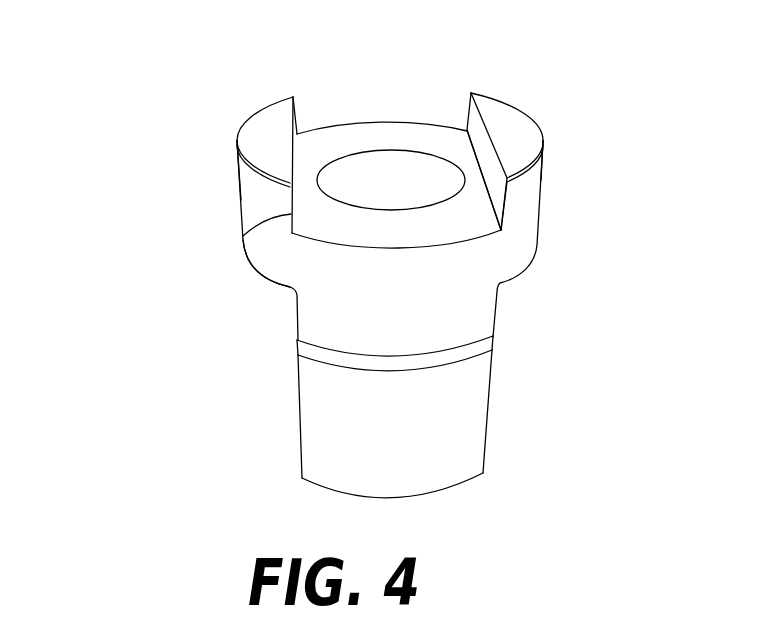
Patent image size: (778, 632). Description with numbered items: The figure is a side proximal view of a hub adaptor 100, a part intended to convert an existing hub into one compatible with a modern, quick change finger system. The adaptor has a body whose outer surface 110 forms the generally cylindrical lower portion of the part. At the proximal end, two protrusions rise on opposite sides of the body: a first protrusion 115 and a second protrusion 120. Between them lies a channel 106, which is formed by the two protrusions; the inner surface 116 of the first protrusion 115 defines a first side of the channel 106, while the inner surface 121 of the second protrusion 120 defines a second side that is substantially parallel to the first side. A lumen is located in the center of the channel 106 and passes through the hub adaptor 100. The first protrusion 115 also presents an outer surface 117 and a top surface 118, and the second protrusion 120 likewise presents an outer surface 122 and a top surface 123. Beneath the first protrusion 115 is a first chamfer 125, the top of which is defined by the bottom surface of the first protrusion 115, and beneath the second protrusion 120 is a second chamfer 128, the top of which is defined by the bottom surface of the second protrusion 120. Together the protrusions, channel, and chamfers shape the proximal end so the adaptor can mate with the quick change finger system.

The hub adaptor 100 is at (384, 271).
The channel 106 is at (388, 135).
The outer surface 110 is at (370, 480).
The first protrusion 115 is at (527, 198).
The inner surface 116 is at (500, 207).
The outer surface 117 is at (547, 148).
The top surface 118 is at (515, 127).
The second protrusion 120 is at (252, 205).
The inner surface 121 is at (243, 232).
The outer surface 122 is at (240, 178).
The top surface 123 is at (265, 133).
The first chamfer 125 is at (492, 377).
The second chamfer 128 is at (298, 385).